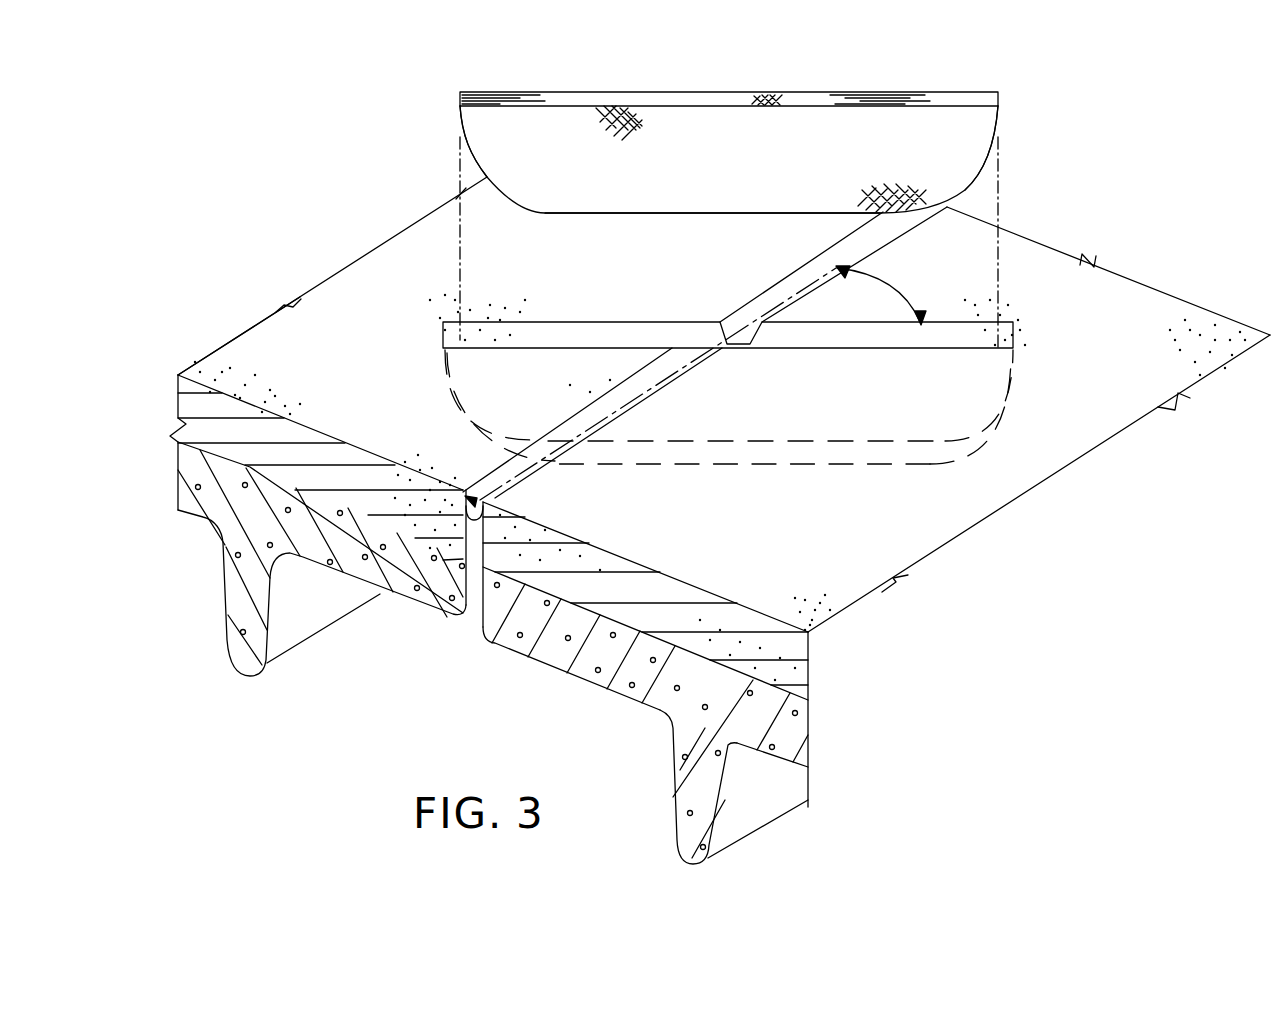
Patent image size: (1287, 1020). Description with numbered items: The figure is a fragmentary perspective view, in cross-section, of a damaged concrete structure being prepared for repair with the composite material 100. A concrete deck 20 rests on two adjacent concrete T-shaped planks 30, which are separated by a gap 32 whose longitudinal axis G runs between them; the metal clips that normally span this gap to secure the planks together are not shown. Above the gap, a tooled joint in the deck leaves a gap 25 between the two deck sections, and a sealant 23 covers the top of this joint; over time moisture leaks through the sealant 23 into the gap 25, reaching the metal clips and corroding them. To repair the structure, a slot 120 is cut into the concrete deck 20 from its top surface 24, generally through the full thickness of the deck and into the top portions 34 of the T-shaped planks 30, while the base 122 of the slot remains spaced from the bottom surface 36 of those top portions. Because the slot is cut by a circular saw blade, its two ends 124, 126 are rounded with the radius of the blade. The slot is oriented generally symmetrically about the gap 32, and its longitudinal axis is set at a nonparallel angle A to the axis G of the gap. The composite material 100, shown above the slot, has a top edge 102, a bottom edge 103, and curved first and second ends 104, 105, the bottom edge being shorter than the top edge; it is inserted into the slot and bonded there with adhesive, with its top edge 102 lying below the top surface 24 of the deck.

The concrete deck 20 is at (327, 310).
The sealant 23 is at (477, 495).
The top surface of the concrete deck 24 is at (393, 263).
The tooled joint gap 25 is at (382, 593).
The T-shaped planks 30 is at (250, 642).
The gap 32 is at (447, 612).
The top portions of the T-shaped planks 34 is at (350, 547).
The bottom surface of the top portions 36 is at (580, 677).
The composite material 100 is at (960, 100).
The top edge 102 is at (812, 98).
The bottom edge 103 is at (687, 215).
The first end 104 is at (472, 153).
The second end 105 is at (1000, 168).
The slot 120 is at (565, 333).
The base of slot 122 is at (798, 457).
The end of the slot 124 is at (452, 390).
The end of the slot 126 is at (978, 436).
The angle A is at (908, 292).
The longitudinal axis of gap G is at (676, 372).